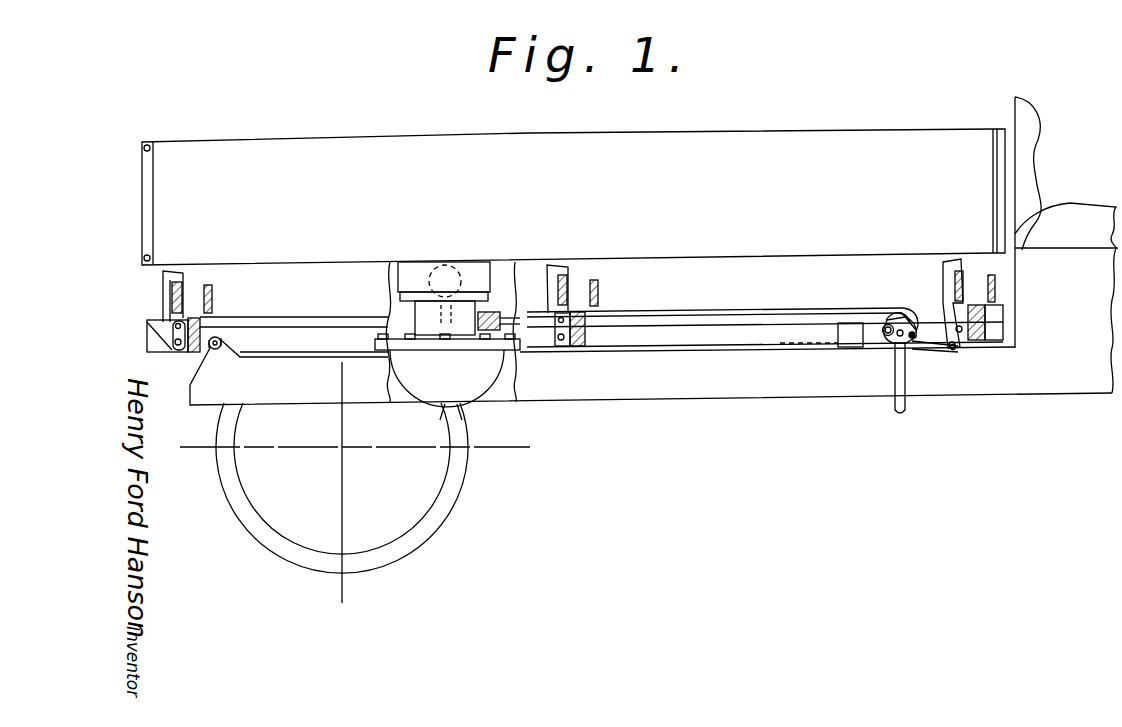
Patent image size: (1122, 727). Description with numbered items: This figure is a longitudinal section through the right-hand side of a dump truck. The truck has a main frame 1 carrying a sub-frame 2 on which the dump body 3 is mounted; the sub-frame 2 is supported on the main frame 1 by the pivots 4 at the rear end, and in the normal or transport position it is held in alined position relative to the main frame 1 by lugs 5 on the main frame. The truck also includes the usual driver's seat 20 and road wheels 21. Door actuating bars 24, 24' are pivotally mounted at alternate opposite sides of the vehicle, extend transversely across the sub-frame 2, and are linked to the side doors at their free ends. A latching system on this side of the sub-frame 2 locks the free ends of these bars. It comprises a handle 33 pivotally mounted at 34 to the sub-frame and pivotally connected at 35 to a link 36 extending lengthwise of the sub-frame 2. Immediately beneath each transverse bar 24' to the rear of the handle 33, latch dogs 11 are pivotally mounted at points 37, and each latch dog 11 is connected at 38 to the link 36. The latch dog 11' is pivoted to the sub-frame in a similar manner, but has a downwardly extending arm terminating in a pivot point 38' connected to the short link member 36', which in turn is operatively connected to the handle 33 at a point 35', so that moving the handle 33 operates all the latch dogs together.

The main frame 1 is at (651, 372).
The sub-frame 2 is at (652, 334).
The dump body 3 is at (573, 197).
The pivots 4 is at (212, 351).
The lugs 5 is at (838, 332).
The latch dogs 11 is at (365, 273).
The latch dog 11' is at (917, 286).
The driver's seat 20 is at (1078, 216).
The road wheels 21 is at (355, 482).
The door actuating bars 24 is at (530, 266).
The door actuating bars 24' is at (635, 293).
The handle 33 is at (907, 404).
The pivot 34 is at (899, 327).
The pivotal connection 35 is at (918, 353).
The connection point 35' is at (852, 357).
The link 36 is at (559, 303).
The short link member 36' is at (978, 361).
The pivot points 37 is at (178, 340).
The connection 38 is at (332, 357).
The pivot point 38' is at (1030, 327).